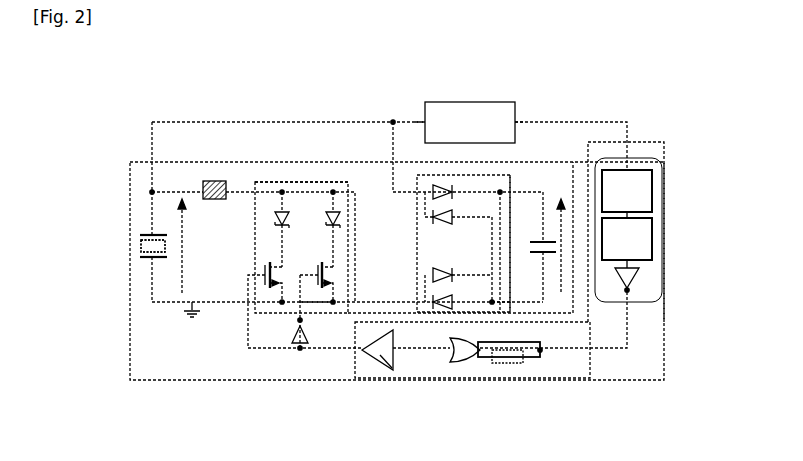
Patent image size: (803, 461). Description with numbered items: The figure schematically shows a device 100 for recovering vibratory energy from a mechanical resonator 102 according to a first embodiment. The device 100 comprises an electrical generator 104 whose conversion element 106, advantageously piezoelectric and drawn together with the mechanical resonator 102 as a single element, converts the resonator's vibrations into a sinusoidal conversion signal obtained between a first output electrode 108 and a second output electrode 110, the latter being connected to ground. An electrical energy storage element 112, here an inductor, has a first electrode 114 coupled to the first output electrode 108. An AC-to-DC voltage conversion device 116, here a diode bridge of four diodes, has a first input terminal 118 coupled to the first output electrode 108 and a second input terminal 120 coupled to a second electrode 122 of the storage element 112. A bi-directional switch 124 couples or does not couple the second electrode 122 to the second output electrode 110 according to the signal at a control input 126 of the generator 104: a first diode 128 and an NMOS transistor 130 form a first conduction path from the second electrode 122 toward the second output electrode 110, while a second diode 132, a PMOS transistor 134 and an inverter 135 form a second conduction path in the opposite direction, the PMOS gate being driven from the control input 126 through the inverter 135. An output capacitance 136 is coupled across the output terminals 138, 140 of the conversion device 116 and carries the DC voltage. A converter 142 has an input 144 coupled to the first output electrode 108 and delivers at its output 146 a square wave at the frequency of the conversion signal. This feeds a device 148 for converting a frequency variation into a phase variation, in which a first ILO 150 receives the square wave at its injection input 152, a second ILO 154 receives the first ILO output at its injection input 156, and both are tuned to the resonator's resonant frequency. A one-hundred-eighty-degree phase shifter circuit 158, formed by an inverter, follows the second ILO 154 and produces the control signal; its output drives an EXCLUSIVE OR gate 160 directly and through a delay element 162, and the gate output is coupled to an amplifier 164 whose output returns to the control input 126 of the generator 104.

The device for recovering vibratory energy 100 is at (645, 54).
The mechanical resonator 102 is at (110, 212).
The electrical generator 104 is at (143, 157).
The conversion element 106 is at (150, 232).
The first output electrode 108 is at (140, 247).
The second output electrode 110 is at (150, 262).
The electrical energy storage element 112 is at (230, 179).
The first electrode 114 is at (167, 190).
The AC-to-DC voltage conversion device 116 is at (417, 243).
The first input terminal 118 is at (392, 188).
The second input terminal 120 is at (405, 300).
The second electrode 122 is at (246, 188).
The bi-directional switch 124 is at (293, 180).
The control input 126 is at (317, 313).
The first diode 128 is at (272, 223).
The NMOS transistor 130 is at (262, 277).
The second diode 132 is at (322, 227).
The PMOS transistor 134 is at (315, 268).
The inverter 135 is at (293, 355).
The output capacitance 136 is at (546, 240).
The output terminal 138 is at (512, 187).
The output terminal 140 is at (507, 303).
The converter 142 is at (472, 105).
The input 144 is at (425, 115).
The output 146 is at (516, 115).
The device for converting a frequency variation into a phase variation 148 is at (652, 140).
The first ILO 150 is at (653, 195).
The injection input 152 is at (637, 167).
The second ILO 154 is at (653, 245).
The injection input 156 is at (630, 215).
The 180° phase shifter circuit 158 is at (635, 282).
The EXCLUSIVE OR gate 160 is at (458, 362).
The delay element 162 is at (510, 363).
The amplifier 164 is at (373, 372).